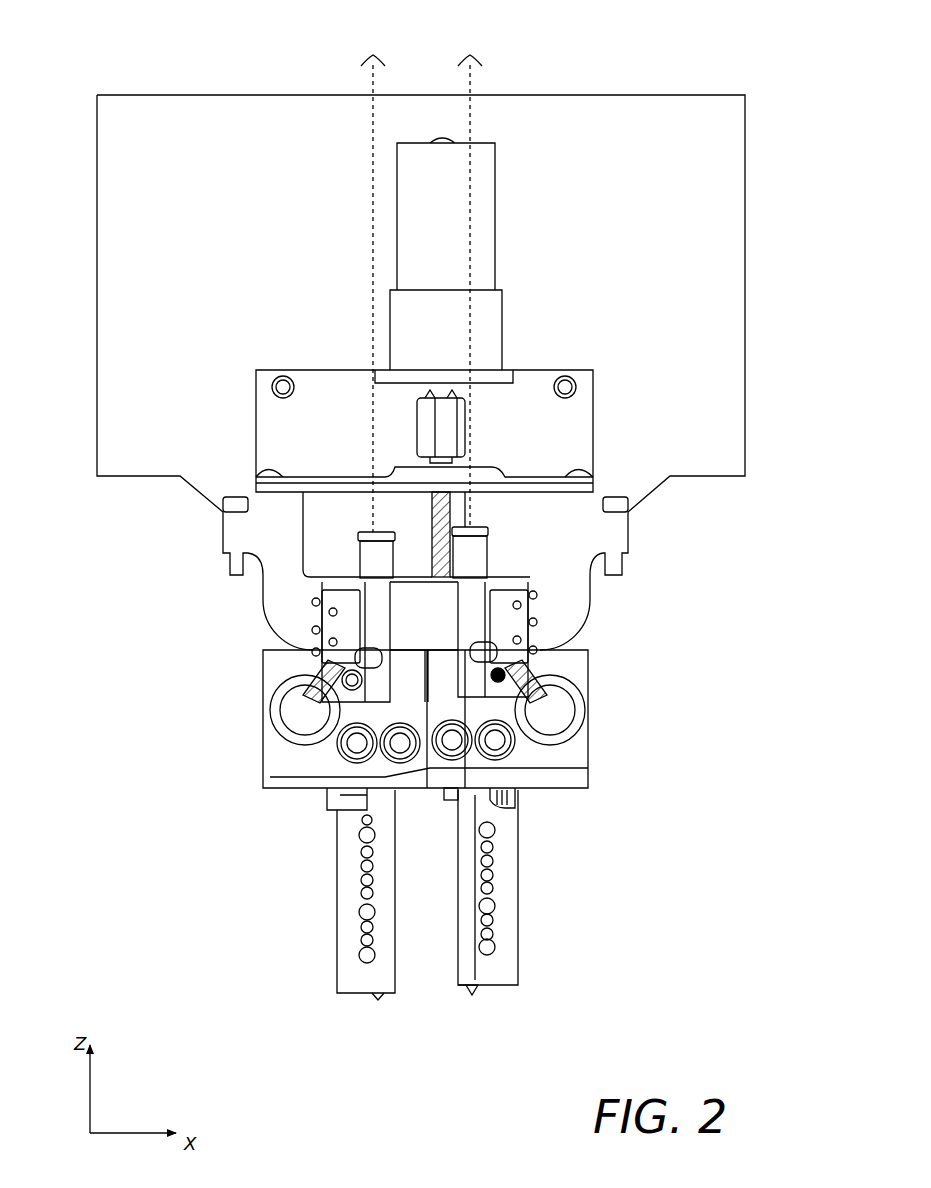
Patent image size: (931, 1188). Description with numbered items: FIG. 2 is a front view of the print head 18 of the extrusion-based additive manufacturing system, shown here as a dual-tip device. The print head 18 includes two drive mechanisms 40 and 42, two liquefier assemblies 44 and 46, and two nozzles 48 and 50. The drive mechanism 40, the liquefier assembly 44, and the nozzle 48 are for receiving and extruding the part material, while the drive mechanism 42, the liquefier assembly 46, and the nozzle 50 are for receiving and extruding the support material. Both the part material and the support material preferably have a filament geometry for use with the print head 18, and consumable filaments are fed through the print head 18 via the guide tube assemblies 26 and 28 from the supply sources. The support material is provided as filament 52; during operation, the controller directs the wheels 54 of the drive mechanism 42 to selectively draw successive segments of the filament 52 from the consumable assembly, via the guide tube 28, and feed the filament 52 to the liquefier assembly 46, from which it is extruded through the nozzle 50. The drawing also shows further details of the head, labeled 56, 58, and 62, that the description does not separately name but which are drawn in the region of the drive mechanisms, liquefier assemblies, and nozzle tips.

The print head 18 is at (512, 62).
The guide tube assembly 26 is at (372, 232).
The guide tube assembly 28 is at (472, 230).
The drive mechanism 40 is at (250, 728).
The drive mechanism 42 is at (603, 718).
The liquefier assembly 44 is at (328, 868).
The liquefier assembly 46 is at (527, 870).
The nozzle 48 is at (376, 1003).
The nozzle 50 is at (474, 1000).
The filament 52 is at (452, 790).
The wheels 54 is at (447, 770).
The clamp 56 is at (512, 792).
The filament 58 is at (460, 885).
The nozzle tip 62 is at (468, 995).